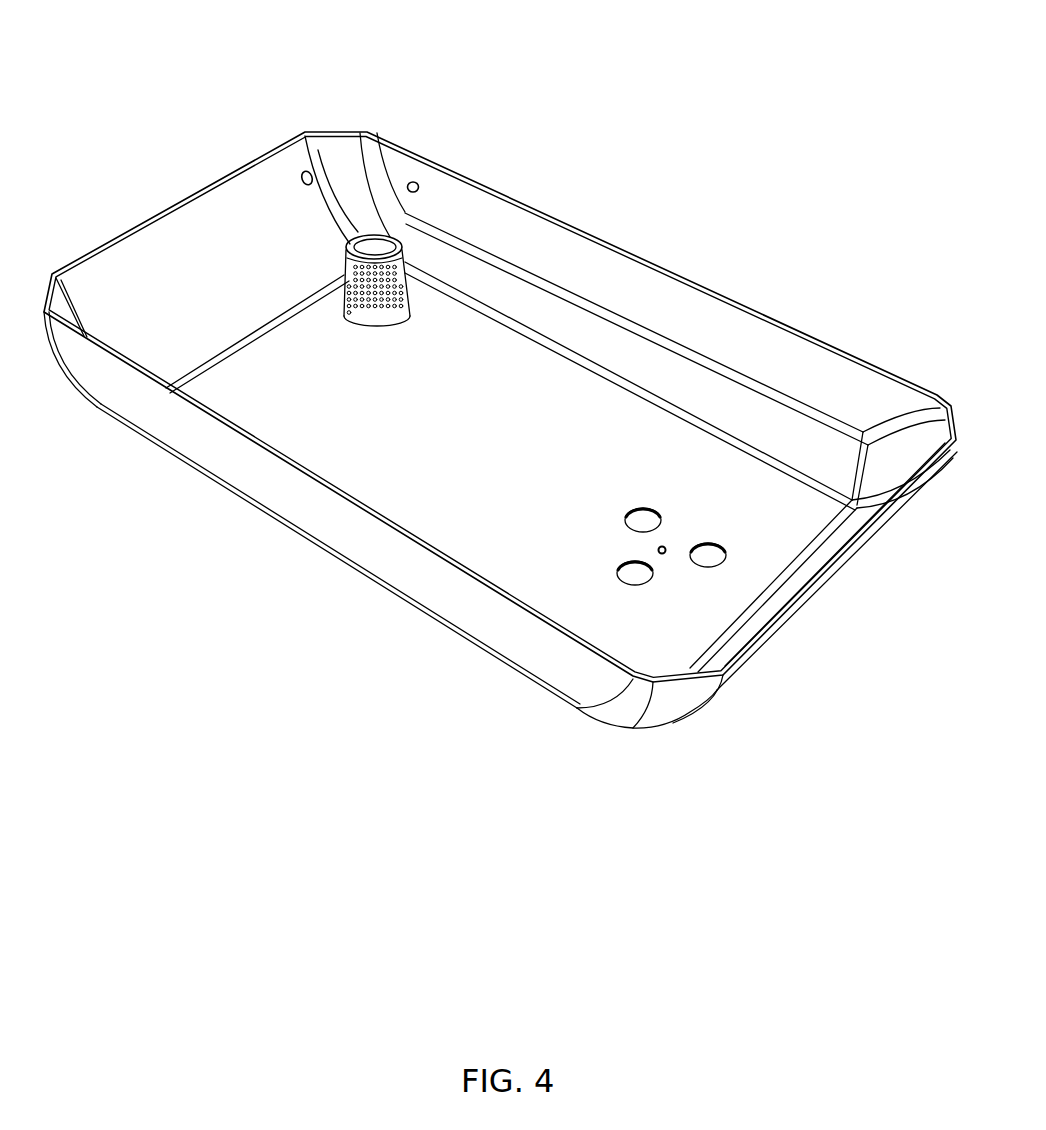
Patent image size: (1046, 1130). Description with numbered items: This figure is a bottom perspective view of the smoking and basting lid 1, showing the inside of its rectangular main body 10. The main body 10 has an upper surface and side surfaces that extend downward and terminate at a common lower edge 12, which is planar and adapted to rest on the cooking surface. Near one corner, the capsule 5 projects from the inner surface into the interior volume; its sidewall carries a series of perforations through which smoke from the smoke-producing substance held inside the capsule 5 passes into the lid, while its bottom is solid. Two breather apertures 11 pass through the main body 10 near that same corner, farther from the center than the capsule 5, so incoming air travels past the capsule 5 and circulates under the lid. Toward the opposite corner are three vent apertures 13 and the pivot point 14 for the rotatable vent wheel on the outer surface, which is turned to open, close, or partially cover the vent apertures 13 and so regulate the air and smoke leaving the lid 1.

The smoking and basting lid 1 is at (181, 254).
The capsule 5 is at (406, 258).
The main body 10 is at (236, 514).
The breather aperture 11 is at (412, 180).
The lower edge 12 is at (644, 258).
The vent apertures 13 is at (649, 578).
The pivot point 14 is at (666, 546).